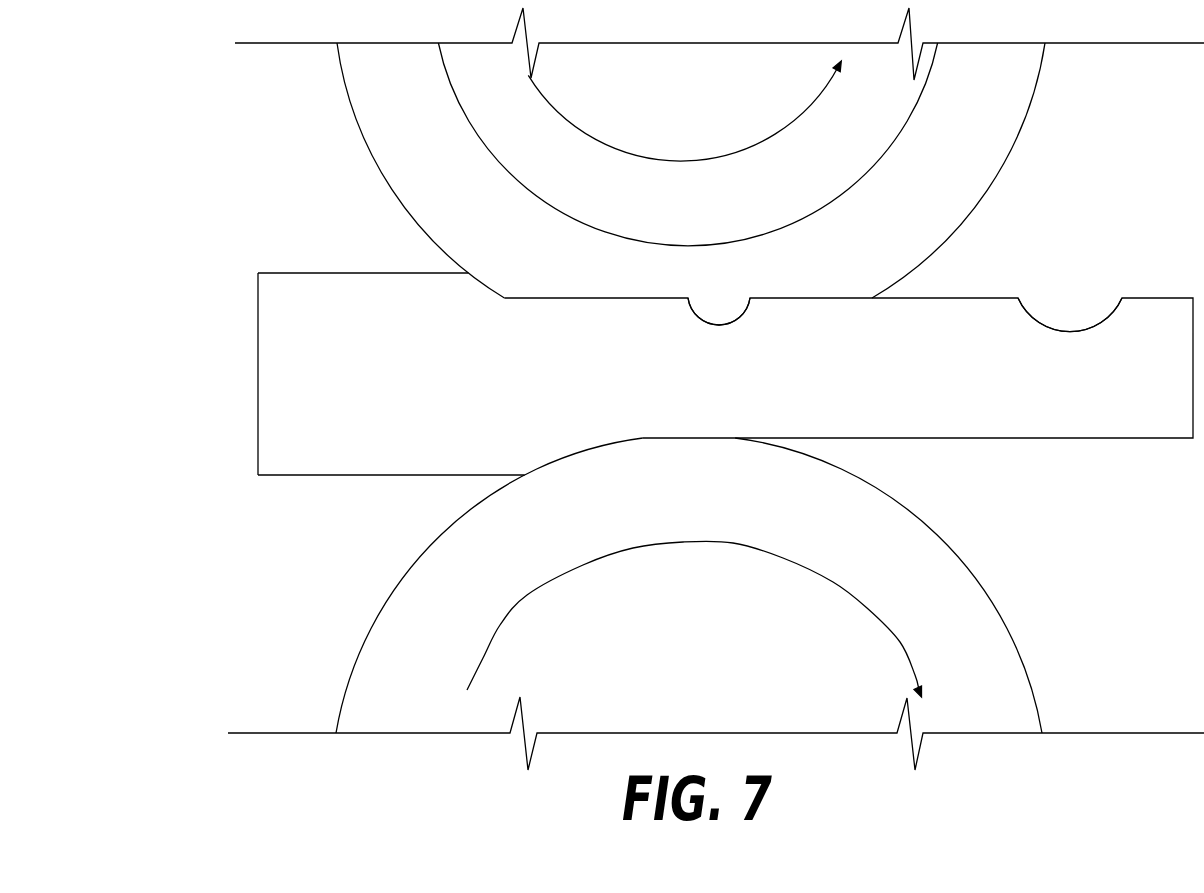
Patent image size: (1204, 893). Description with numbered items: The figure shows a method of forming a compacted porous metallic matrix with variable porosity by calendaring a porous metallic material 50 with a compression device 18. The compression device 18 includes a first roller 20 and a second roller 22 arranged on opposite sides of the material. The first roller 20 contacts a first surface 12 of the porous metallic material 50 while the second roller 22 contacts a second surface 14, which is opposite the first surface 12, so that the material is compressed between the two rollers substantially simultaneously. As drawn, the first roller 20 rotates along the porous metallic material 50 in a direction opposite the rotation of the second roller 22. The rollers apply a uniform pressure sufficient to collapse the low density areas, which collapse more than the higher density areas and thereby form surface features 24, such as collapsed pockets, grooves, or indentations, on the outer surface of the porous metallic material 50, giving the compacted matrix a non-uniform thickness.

The first surface 12 is at (670, 403).
The second surface 14 is at (310, 475).
The compression device 18 is at (1070, 115).
The first roller 20 is at (430, 172).
The second roller 22 is at (460, 543).
The surface features 24 is at (730, 323).
The porous metallic material 50 is at (258, 386).